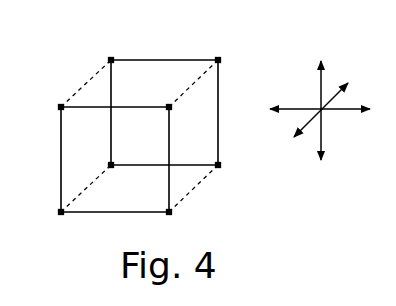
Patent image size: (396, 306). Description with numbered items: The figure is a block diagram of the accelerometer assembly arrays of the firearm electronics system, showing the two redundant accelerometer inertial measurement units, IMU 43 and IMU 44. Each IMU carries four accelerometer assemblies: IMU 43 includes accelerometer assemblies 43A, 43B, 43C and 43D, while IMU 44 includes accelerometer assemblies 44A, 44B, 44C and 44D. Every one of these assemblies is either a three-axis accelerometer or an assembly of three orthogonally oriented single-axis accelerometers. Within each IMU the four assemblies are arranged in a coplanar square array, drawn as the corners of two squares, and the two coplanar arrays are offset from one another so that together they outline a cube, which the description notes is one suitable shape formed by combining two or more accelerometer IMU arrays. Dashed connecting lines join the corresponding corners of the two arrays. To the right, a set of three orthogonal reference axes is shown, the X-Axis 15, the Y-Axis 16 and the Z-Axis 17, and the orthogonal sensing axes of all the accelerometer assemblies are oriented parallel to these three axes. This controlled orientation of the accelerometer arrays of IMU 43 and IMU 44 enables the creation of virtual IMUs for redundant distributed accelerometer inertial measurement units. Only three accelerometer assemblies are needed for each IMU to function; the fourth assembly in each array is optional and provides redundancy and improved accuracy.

The accelerometer IMU 43 is at (229, 69).
The accelerometer IMU 44 is at (186, 213).
The accelerometer assembly 43A is at (113, 57).
The accelerometer assembly 43B is at (220, 57).
The accelerometer assembly 43C is at (113, 162).
The accelerometer assembly 43D is at (220, 162).
The accelerometer assembly 44A is at (59, 105).
The accelerometer assembly 44B is at (167, 105).
The accelerometer assembly 44C is at (59, 210).
The accelerometer assembly 44D is at (167, 210).
The X-Axis 15 is at (279, 111).
The Y-Axis 16 is at (341, 90).
The Z-Axis 17 is at (325, 137).